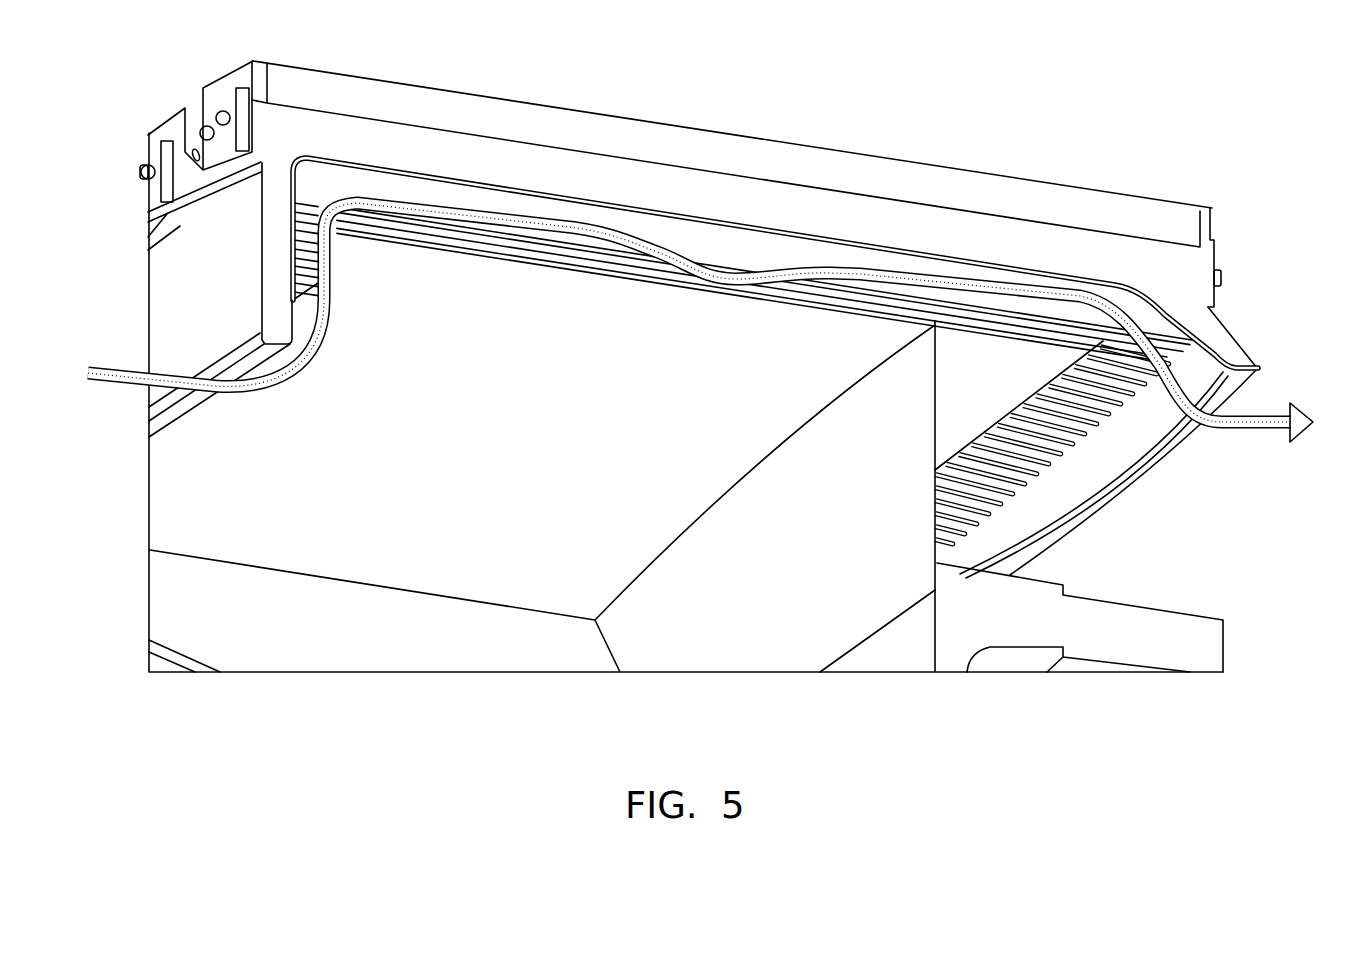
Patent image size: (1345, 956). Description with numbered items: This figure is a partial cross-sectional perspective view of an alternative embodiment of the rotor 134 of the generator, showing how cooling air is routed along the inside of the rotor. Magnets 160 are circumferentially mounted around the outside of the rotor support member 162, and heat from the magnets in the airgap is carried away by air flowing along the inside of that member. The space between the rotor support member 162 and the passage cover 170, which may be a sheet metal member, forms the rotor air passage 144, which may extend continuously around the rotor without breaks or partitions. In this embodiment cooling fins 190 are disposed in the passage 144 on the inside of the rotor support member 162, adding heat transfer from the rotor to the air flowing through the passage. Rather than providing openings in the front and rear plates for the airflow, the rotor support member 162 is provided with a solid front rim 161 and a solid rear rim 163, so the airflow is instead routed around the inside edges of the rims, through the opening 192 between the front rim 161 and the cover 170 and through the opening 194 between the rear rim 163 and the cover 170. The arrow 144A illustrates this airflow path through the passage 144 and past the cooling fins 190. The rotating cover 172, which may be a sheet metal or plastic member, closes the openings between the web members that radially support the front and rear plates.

The rotor 134 is at (1210, 645).
The passage 144 is at (330, 183).
The arrow 144A is at (1260, 432).
The magnets 160 is at (883, 176).
The front rim 161 is at (275, 238).
The rotor support member 162 is at (1193, 276).
The rear rim 163 is at (1233, 353).
The passage cover 170 is at (512, 409).
The rotating cover 172 is at (853, 540).
The cooling fins 190 is at (1067, 442).
The opening 192 is at (357, 234).
The opening 194 is at (1138, 403).